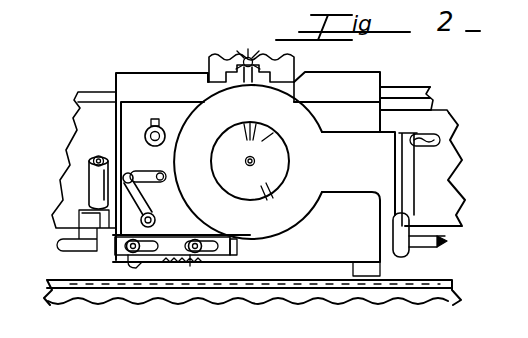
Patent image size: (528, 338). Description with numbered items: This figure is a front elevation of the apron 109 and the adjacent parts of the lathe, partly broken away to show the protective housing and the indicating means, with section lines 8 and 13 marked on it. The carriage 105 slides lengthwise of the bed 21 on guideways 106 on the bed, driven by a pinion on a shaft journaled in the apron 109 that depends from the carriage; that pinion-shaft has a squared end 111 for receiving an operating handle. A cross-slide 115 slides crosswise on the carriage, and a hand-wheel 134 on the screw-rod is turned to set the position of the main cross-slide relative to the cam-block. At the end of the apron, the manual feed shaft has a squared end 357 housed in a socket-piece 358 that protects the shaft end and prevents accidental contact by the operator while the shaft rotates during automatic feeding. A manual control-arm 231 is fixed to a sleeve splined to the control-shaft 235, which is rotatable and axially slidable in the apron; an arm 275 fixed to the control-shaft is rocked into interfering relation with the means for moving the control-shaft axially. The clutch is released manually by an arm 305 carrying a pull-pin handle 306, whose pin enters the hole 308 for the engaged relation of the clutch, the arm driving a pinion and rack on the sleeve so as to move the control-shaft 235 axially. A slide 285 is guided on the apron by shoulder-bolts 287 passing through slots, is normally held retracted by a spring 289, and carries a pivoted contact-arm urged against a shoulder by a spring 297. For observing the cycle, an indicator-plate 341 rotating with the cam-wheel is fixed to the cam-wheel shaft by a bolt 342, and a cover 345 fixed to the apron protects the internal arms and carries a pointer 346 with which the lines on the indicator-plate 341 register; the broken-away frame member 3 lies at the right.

The section line 13 is at (143, 4).
The section line 8 is at (248, 5).
The hand-wheel 134 is at (233, 56).
The carriage 105 is at (173, 80).
The cross-slide 115 is at (209, 65).
The guideways 106 is at (432, 100).
The squared end 111 is at (148, 127).
The pointer 346 is at (250, 122).
The bed 21 is at (446, 128).
The frame member 3 is at (455, 151).
The squared end 357 is at (88, 158).
The socket-piece 358 is at (89, 181).
The pull-pin handle 306 is at (145, 170).
The hole 308 is at (171, 169).
The bolt 342 is at (255, 161).
The indicator-plate 341 is at (280, 175).
The manual control-arm 231 is at (417, 177).
The arm 305 is at (146, 208).
The slide 285 is at (180, 235).
The spring 297 is at (216, 222).
The cover 345 is at (290, 225).
The arm 275 is at (72, 253).
The shoulder-bolts 287 is at (132, 258).
The spring 289 is at (196, 262).
The apron 109 is at (331, 266).
The control-shaft 235 is at (440, 246).